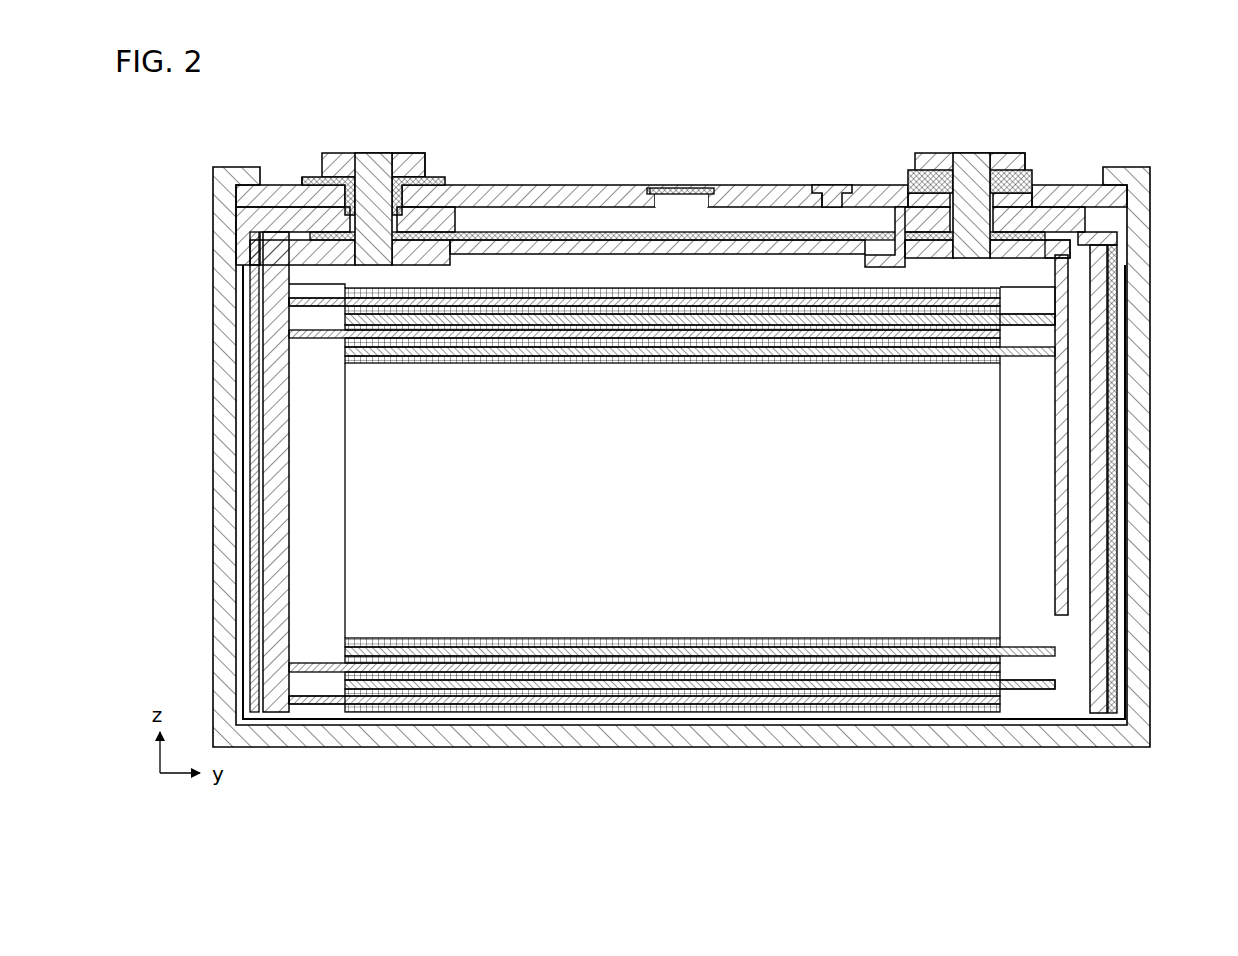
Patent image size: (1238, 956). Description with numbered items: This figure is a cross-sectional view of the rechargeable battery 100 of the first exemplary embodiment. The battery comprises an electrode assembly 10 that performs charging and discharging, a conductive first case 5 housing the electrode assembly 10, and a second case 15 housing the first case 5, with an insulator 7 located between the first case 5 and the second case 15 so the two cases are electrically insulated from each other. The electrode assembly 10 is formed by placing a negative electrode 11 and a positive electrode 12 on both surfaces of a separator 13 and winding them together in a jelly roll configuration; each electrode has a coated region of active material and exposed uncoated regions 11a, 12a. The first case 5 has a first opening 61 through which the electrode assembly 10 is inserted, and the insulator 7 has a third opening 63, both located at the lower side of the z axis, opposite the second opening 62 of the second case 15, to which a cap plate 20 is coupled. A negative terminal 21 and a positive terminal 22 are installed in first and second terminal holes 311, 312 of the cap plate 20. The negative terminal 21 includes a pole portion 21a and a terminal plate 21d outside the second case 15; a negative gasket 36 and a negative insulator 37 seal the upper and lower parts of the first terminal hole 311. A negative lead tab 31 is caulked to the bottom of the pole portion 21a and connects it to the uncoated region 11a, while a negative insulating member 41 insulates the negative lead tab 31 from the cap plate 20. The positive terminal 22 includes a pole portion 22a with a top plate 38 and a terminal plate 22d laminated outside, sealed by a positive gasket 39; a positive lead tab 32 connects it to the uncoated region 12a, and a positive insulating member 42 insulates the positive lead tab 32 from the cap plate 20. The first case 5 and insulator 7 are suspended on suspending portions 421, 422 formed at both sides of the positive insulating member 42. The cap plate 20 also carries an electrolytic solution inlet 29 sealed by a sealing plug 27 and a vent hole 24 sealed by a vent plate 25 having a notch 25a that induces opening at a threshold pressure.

The rechargeable battery 100 is at (671, 83).
The electrode assembly 10 is at (672, 542).
The negative electrode 11 is at (445, 668).
The uncoated region of negative electrode 11a is at (330, 700).
The positive electrode 12 is at (565, 684).
The uncoated region of positive electrode 12a is at (1012, 686).
The separator 13 is at (685, 660).
The second case 15 is at (1140, 465).
The cap plate 20 is at (760, 200).
The negative terminal 21 is at (373, 148).
The pole portion of negative terminal 21a is at (380, 262).
The terminal plate of negative terminal 21d is at (418, 155).
The positive terminal 22 is at (970, 148).
The pole portion of positive terminal 22a is at (985, 262).
The terminal plate of positive terminal 22d is at (1015, 170).
The vent hole 24 is at (682, 198).
The vent plate 25 is at (710, 190).
The notch 25a is at (660, 190).
The sealing plug 27 is at (835, 194).
The electrolytic solution inlet 29 is at (815, 190).
The negative lead tab 31 is at (285, 412).
The positive lead tab 32 is at (1065, 545).
The negative gasket 36 is at (330, 178).
The negative insulator 37 is at (305, 180).
The top plate 38 is at (1020, 182).
The positive gasket 39 is at (920, 180).
The negative insulating member 41 is at (290, 222).
The positive insulating member 42 is at (1090, 220).
The suspending portion 421 is at (880, 260).
The suspending portion 422 is at (1060, 250).
The first terminal hole 311 is at (395, 160).
The second terminal hole 312 is at (1000, 160).
The first case 5 is at (515, 245).
The insulator 7 is at (575, 236).
The first opening 61 is at (1095, 700).
The second opening 62 is at (1100, 200).
The third opening 63 is at (1112, 700).